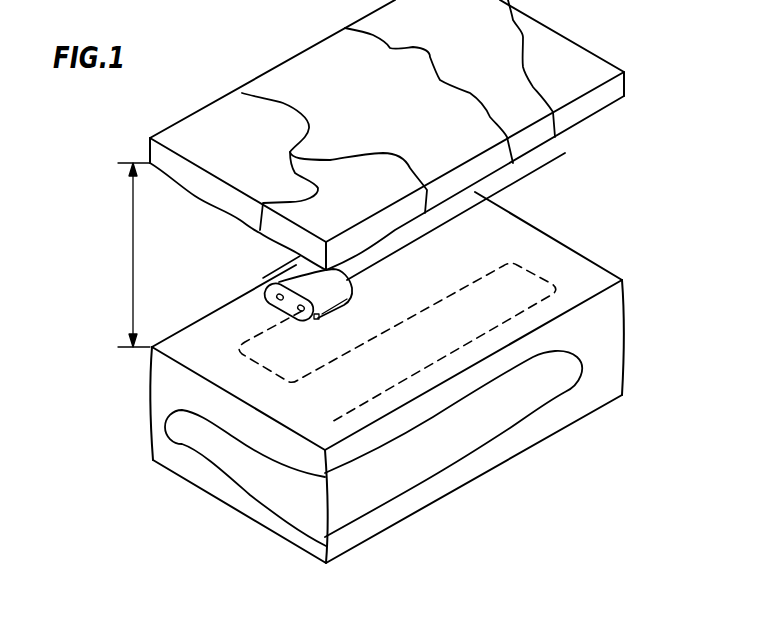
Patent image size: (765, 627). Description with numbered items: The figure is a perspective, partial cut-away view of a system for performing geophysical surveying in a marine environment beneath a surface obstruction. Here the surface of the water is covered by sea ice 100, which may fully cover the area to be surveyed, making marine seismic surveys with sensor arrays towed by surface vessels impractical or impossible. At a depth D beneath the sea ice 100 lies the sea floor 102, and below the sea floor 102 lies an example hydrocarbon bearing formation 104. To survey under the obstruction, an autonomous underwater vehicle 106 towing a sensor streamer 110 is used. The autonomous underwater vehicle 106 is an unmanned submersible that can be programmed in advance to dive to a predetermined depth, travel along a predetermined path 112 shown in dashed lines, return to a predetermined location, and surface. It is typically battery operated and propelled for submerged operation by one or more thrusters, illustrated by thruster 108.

The sea ice 100 is at (548, 50).
The sea floor 102 is at (213, 332).
The hydrocarbon bearing formation 104 is at (303, 498).
The autonomous underwater vehicle 106 is at (298, 279).
The thruster 108 is at (322, 319).
The sensor streamer 110 is at (542, 170).
The path 112 is at (464, 285).
The depth D is at (134, 255).